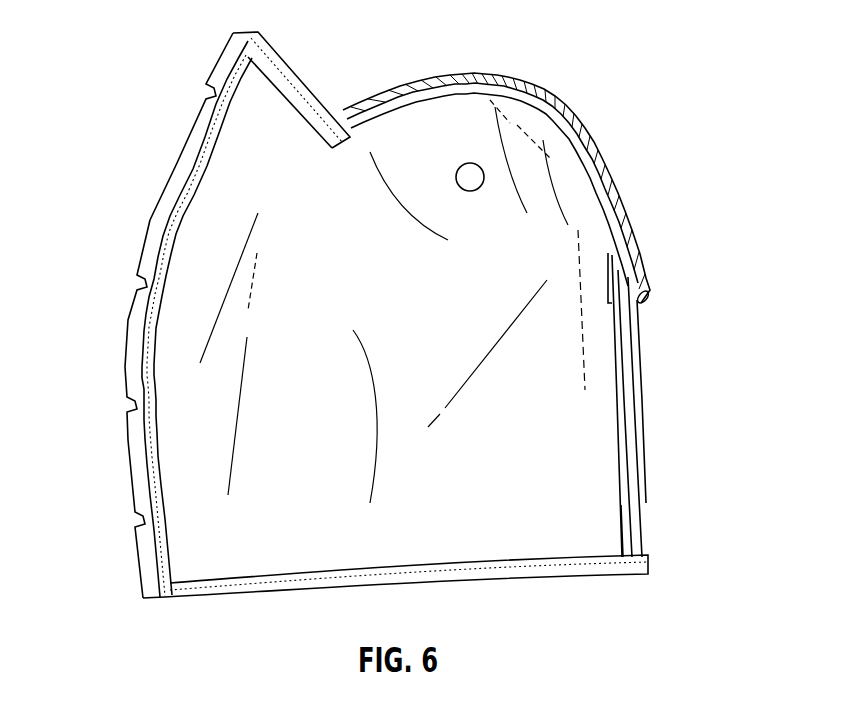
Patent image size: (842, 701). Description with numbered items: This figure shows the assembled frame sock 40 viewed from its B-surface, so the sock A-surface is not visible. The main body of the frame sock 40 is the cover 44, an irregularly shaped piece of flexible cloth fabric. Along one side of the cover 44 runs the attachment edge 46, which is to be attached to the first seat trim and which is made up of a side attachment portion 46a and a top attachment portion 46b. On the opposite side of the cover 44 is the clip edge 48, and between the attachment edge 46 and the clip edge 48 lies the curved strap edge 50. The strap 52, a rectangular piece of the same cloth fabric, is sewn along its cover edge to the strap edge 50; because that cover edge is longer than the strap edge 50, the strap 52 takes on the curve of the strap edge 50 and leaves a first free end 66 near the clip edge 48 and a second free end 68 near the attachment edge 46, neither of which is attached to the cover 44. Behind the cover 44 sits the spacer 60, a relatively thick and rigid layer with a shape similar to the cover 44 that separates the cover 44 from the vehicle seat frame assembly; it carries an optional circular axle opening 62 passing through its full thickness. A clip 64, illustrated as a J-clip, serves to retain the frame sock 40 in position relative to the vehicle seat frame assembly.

The frame sock 40 is at (667, 73).
The cover 44 is at (530, 570).
The attachment edge 46 is at (142, 587).
The side attachment portion 46a is at (125, 365).
The top attachment portion 46b is at (177, 163).
The clip edge 48 is at (638, 400).
The strap edge 50 is at (560, 142).
The strap 52 is at (587, 163).
The spacer 60 is at (305, 552).
The axle opening 62 is at (470, 163).
The clip 64 is at (638, 530).
The first free end 66 is at (352, 112).
The second free end 68 is at (647, 293).